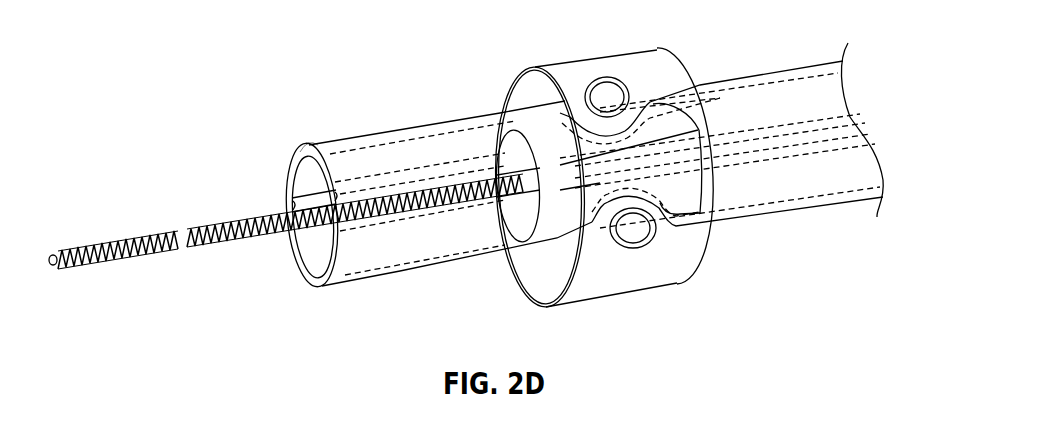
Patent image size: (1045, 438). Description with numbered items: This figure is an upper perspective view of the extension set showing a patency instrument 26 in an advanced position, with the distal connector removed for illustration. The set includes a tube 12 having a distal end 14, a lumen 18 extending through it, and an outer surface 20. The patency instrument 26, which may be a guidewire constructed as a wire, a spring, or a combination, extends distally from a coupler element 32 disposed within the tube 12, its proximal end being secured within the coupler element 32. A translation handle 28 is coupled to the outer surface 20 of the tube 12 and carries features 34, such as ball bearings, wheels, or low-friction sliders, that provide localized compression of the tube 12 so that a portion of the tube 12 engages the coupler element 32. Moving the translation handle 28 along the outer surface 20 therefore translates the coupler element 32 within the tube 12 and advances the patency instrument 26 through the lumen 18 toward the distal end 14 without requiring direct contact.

The tube 12 is at (810, 62).
The distal end 14 is at (303, 151).
The lumen 18 is at (322, 252).
The outer surface 20 is at (422, 125).
The patency instrument 26 is at (100, 246).
The translation handle 28 is at (52, 266).
The coupler element 32 is at (650, 133).
The features 34 is at (607, 97).